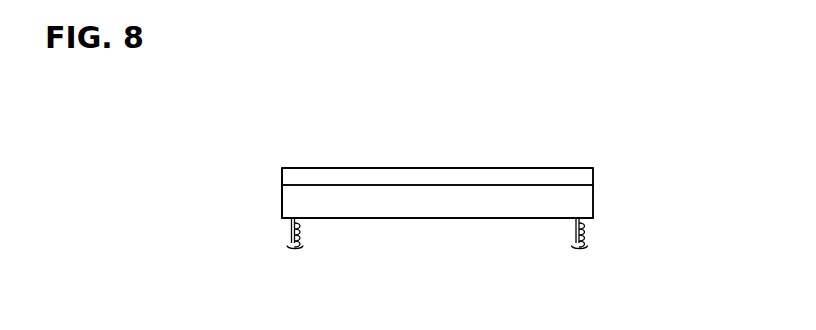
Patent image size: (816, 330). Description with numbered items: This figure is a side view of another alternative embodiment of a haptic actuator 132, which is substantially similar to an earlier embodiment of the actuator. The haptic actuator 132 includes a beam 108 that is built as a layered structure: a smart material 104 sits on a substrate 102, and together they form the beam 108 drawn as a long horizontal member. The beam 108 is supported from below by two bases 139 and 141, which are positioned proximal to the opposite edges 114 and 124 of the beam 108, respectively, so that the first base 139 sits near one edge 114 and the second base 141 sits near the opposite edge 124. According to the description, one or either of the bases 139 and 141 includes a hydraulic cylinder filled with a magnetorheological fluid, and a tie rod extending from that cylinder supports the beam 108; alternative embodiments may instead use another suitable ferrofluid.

The haptic actuator 132 is at (620, 103).
The smart material 104 is at (593, 178).
The substrate 102 is at (593, 195).
The beam 108 is at (393, 168).
The edge 114 is at (282, 193).
The edge 124 is at (593, 205).
The base 139 is at (292, 225).
The base 141 is at (572, 232).